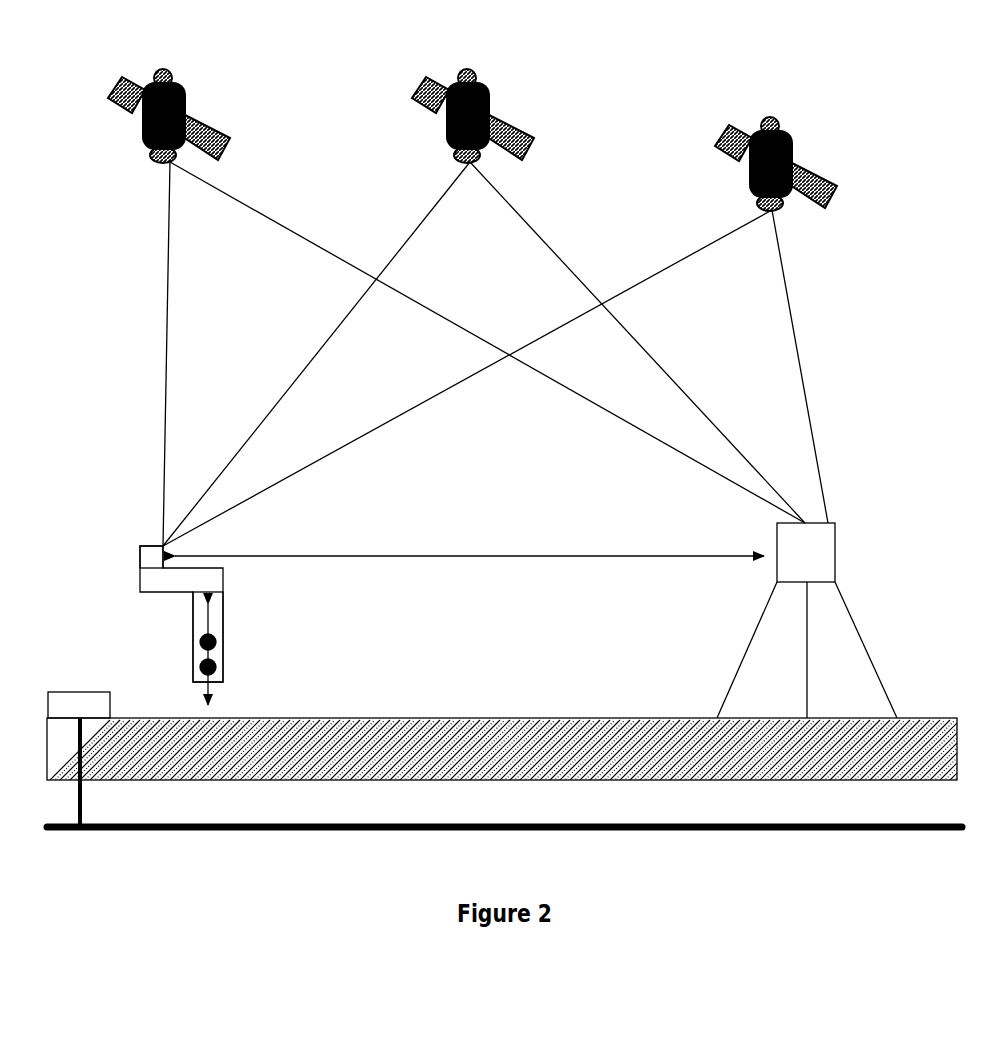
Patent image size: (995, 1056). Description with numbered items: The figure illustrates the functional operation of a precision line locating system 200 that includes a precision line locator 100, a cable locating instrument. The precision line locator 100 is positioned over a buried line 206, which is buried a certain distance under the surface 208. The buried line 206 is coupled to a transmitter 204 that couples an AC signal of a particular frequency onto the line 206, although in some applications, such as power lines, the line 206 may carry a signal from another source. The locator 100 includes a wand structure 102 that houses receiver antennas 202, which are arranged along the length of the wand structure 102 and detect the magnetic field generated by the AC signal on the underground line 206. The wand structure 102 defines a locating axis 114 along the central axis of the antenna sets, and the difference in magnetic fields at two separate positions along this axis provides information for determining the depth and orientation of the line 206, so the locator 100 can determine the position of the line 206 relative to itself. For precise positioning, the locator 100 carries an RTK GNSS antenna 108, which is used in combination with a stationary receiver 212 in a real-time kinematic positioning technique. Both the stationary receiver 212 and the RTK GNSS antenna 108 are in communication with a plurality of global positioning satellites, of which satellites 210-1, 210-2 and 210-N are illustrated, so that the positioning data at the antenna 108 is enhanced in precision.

The precision line locator 100 is at (110, 592).
The wand structure 102 is at (218, 605).
The RTK GNSS antenna 108 is at (145, 552).
The locating axis 114 is at (205, 690).
The precision line locating system 200 is at (692, 893).
The receiver antennas 202 is at (217, 648).
The transmitter 204 is at (80, 717).
The buried line 206 is at (193, 830).
The surface 208 is at (440, 718).
The global positioning satellite 210-1 is at (157, 72).
The global positioning satellite 210-2 is at (420, 77).
The global positioning satellite 210-N is at (767, 118).
The stationary receiver 212 is at (807, 555).